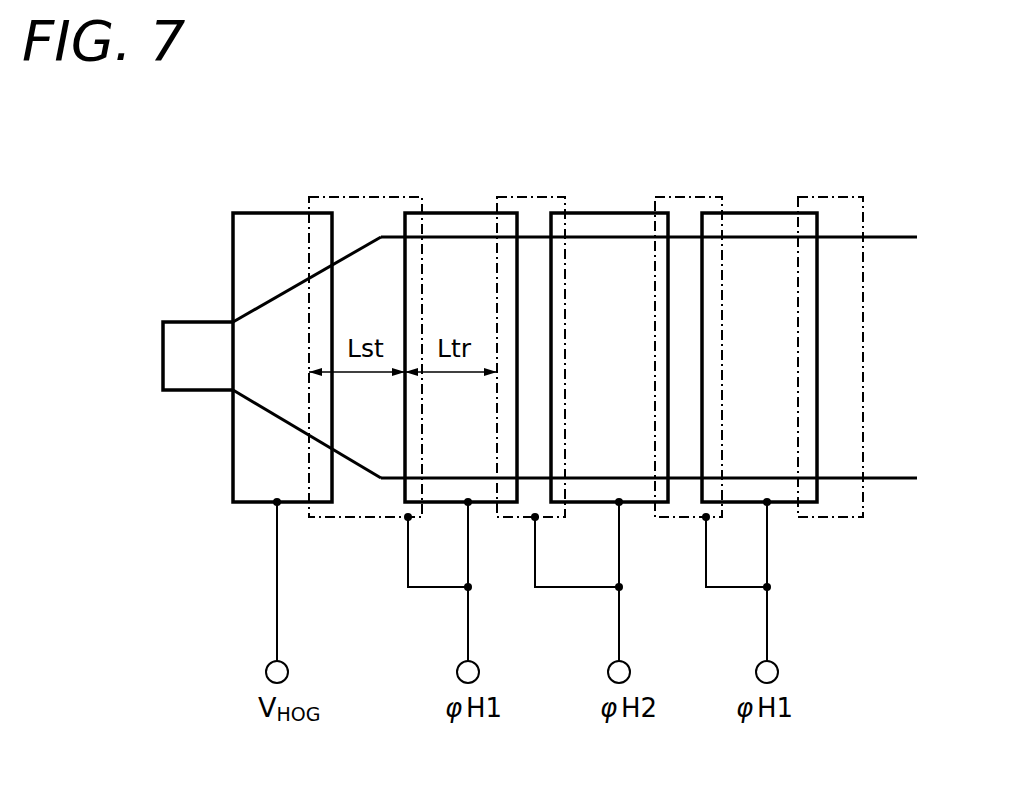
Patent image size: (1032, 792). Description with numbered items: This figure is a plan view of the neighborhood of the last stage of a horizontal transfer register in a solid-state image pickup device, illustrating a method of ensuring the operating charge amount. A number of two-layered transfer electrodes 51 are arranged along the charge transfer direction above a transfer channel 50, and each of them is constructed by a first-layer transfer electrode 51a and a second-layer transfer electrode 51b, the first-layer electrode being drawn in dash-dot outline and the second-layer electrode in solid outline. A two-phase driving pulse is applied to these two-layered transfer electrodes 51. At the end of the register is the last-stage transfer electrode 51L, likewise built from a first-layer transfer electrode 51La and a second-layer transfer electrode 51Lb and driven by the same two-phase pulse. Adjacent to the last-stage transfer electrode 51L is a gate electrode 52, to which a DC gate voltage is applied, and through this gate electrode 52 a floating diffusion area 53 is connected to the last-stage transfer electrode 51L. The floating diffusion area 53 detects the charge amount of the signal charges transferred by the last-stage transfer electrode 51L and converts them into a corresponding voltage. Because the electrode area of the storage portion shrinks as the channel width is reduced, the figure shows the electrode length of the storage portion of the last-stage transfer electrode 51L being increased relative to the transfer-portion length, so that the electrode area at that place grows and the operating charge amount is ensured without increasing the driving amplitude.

The transfer channel 50 is at (838, 237).
The two-layered transfer electrodes 51 is at (657, 293).
The transfer electrode as the first layer 51a is at (543, 197).
The transfer electrode as the second layer 51b is at (613, 213).
The last-stage transfer electrode 51L is at (424, 293).
The first-layer transfer electrode of the last-stage transfer electrode 51La is at (395, 197).
The second-layer transfer electrode of the last-stage transfer electrode 51Lb is at (460, 213).
The gate electrode 52 is at (263, 212).
The floating diffusion area 53 is at (200, 392).